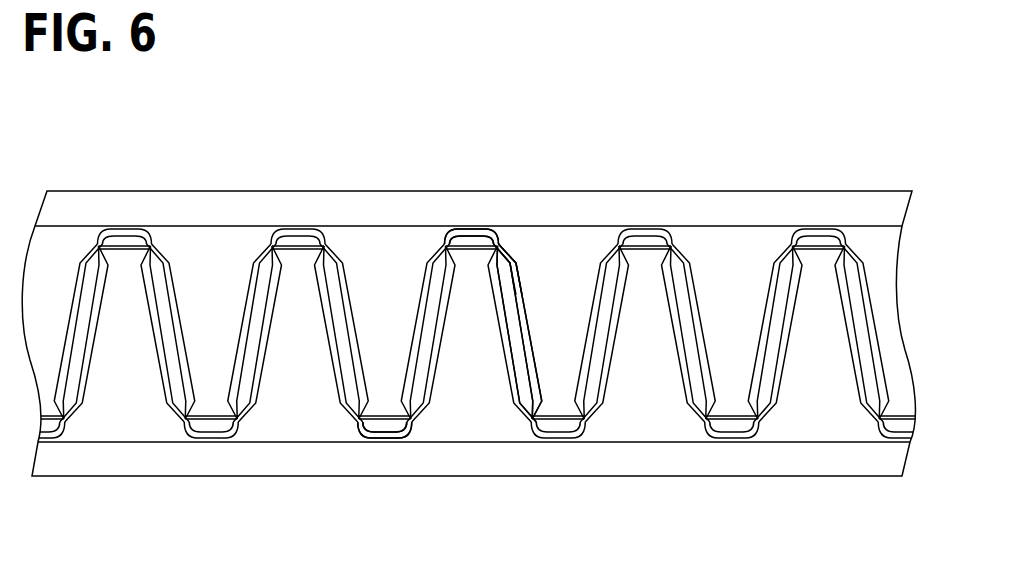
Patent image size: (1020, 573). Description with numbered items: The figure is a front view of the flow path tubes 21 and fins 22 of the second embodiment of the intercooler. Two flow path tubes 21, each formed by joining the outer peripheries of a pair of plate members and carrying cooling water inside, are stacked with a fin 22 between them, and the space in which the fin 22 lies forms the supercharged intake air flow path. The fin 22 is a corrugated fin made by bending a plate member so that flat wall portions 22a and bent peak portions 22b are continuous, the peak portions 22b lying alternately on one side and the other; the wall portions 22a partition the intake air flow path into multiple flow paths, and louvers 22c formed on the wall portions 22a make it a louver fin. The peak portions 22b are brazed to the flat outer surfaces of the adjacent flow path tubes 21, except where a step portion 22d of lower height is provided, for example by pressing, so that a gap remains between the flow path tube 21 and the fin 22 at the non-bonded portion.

The flow path tube 21 is at (730, 191).
The fin 22 is at (418, 291).
The wall portion 22a is at (508, 288).
The peak portion 22b is at (516, 253).
The louver 22c is at (523, 313).
The step portion 22d is at (470, 237).